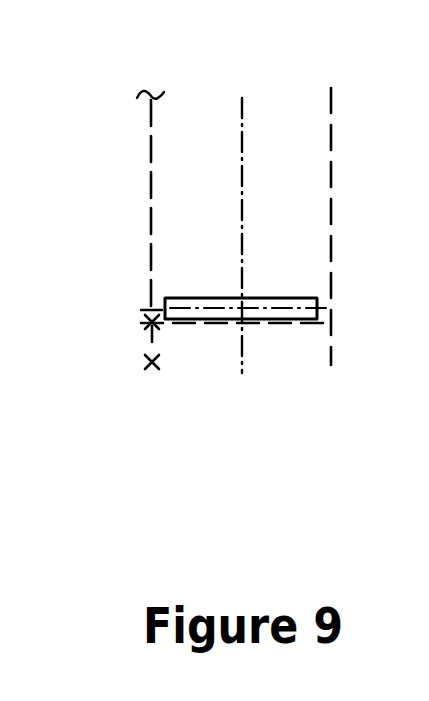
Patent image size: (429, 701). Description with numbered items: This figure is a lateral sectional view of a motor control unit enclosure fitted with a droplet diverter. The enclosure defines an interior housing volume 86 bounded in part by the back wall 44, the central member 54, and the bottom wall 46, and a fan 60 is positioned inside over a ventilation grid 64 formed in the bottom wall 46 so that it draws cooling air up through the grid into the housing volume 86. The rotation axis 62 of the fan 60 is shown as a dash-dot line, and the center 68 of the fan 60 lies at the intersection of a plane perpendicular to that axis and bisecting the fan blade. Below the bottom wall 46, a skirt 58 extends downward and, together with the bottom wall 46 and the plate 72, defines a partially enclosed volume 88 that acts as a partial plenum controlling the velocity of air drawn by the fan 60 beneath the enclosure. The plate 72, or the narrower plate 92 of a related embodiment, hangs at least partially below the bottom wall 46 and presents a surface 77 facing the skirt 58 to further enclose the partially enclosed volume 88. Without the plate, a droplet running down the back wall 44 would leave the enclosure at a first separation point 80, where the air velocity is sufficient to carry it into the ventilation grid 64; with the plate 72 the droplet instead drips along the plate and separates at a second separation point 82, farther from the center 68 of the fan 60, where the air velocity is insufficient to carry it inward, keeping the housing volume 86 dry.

The back wall 44 is at (151, 266).
The housing volume 86 is at (281, 108).
The central member 54 is at (331, 212).
The rotation axis 62 is at (242, 262).
The skirt 58 is at (330, 333).
The first separation point 80 is at (146, 322).
The second separation point 82 is at (151, 366).
The plate 72 is at (87, 373).
The plate 92 is at (147, 344).
The surface 77 is at (152, 342).
The partially enclosed volume 88 is at (213, 336).
The bottom wall 46 is at (224, 323).
The center 68 is at (243, 322).
The ventilation grid 64 is at (252, 306).
The fan 60 is at (297, 313).